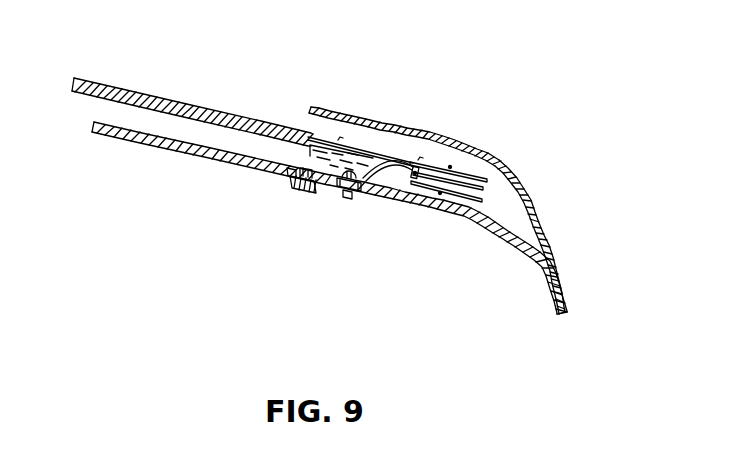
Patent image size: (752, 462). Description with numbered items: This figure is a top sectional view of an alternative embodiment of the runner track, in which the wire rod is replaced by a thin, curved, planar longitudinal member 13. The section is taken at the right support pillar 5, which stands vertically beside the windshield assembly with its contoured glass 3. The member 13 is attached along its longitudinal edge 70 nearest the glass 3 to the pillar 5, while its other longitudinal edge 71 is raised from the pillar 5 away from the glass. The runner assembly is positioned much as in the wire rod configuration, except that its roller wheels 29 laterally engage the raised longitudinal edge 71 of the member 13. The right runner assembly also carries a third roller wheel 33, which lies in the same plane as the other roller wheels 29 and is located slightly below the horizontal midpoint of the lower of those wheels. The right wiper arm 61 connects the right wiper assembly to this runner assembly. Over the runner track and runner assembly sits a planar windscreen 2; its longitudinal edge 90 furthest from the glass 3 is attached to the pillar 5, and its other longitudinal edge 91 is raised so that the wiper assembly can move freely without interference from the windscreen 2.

The planar windscreen 2 is at (433, 133).
The contoured glass 3 is at (183, 140).
The right support pillar 5 is at (452, 212).
The thin curved planar longitudinal member 13 is at (385, 178).
The roller wheels 29 is at (481, 193).
The third roller wheel 33 is at (310, 150).
The right wiper arm 61 is at (232, 123).
The longitudinal edge of member nearest glass 70 is at (367, 182).
The raised longitudinal edge of member 71 is at (413, 168).
The longitudinal edge of windscreen furthest from glass 90 is at (553, 263).
The raised longitudinal edge of windscreen 91 is at (309, 106).